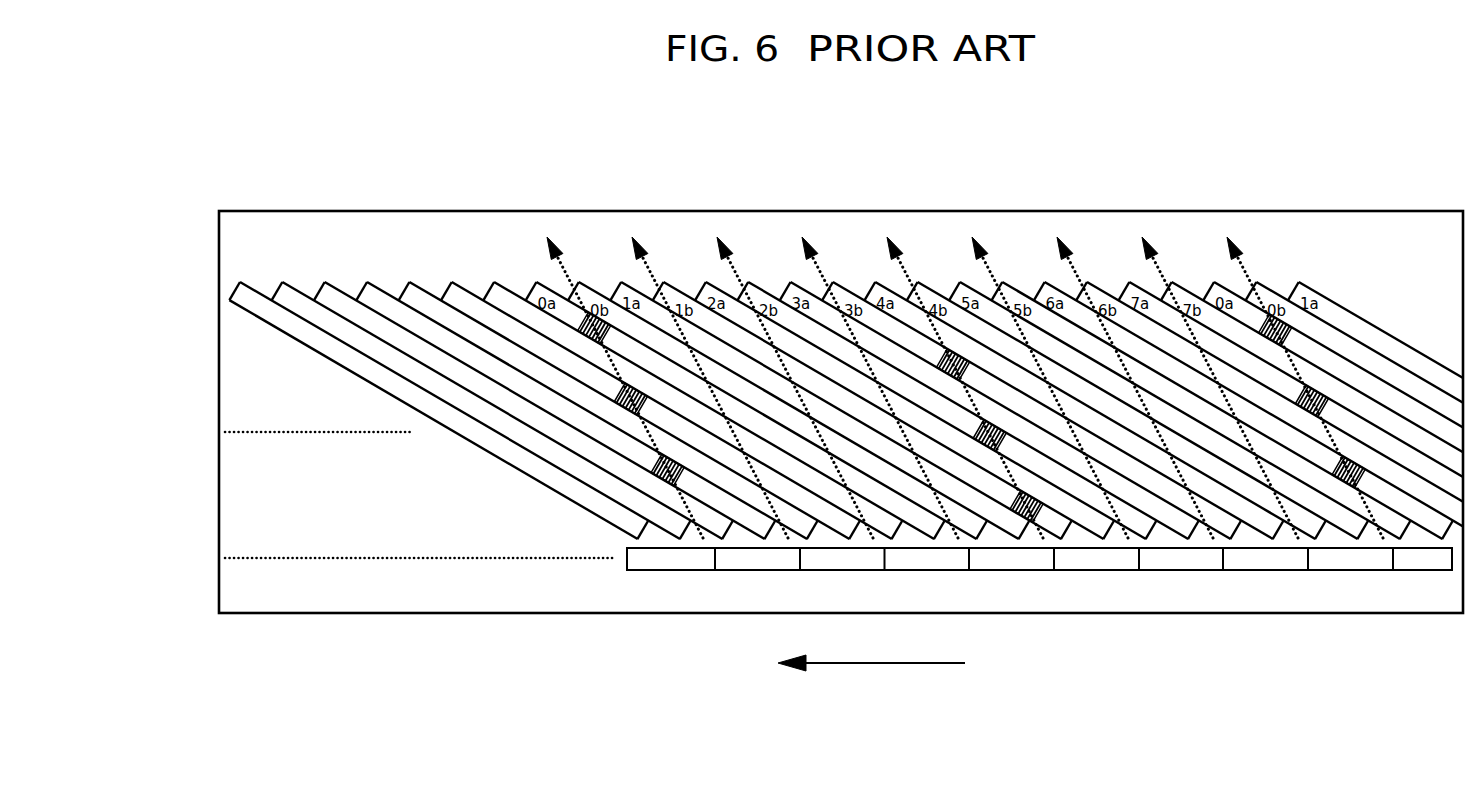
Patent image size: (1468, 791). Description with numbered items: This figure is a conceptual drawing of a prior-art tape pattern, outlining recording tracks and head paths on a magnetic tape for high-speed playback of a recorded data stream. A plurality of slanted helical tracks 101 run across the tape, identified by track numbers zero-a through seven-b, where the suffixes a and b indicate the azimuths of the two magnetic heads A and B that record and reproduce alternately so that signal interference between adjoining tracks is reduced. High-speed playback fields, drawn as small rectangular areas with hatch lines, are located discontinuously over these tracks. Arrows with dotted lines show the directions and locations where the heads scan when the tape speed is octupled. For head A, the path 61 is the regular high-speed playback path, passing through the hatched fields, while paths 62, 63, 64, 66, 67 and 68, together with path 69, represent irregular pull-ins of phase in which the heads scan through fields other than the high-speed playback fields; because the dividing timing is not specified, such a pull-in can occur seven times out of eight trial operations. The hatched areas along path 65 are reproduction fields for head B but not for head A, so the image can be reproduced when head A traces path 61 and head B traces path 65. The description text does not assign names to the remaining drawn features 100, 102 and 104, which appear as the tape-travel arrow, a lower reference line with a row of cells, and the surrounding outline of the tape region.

The path 61 is at (569, 273).
The path 62 is at (654, 273).
The path 63 is at (739, 273).
The path 64 is at (824, 273).
The path 65 is at (909, 273).
The path 66 is at (994, 273).
The path 67 is at (1079, 273).
The path 68 is at (1160, 273).
The path 69 is at (1243, 273).
The moving direction 100 is at (888, 668).
The helical tracks 101 is at (224, 433).
The reference line 102 is at (224, 558).
The recording area 104 is at (386, 210).